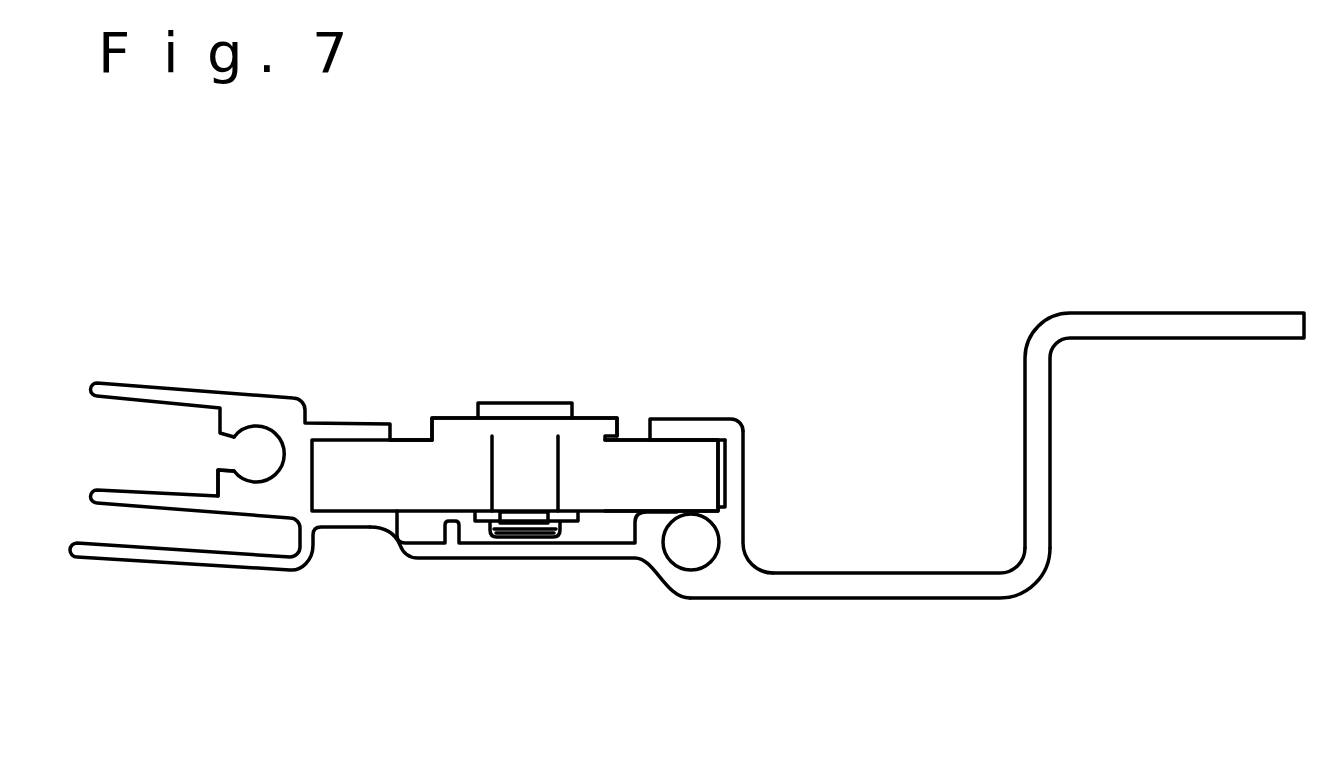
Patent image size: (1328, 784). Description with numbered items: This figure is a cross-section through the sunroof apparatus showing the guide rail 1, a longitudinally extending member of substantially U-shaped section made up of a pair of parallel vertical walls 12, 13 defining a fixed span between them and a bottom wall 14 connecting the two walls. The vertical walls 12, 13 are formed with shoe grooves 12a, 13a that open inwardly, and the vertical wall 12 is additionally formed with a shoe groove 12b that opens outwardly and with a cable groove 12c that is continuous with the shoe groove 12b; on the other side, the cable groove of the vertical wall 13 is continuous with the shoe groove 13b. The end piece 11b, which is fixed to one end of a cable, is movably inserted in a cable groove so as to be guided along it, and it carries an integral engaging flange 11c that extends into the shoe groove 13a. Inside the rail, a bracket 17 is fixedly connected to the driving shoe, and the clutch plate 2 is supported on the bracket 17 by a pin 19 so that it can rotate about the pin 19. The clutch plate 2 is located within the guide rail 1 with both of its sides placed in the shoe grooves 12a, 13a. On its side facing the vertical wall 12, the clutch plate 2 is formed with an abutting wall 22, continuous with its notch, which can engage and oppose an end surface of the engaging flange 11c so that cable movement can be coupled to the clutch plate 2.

The guide rail 1 is at (92, 374).
The clutch plate 2 is at (412, 428).
The end piece 11b is at (692, 533).
The engaging flange 11c is at (705, 503).
The vertical wall 12 is at (250, 413).
The shoe groove 12a is at (348, 510).
The shoe groove 12b is at (160, 413).
The cable groove 12c is at (243, 482).
The vertical wall 13 is at (737, 463).
The shoe groove 13a is at (696, 446).
The shoe groove 13b is at (712, 565).
The bottom wall 14 is at (493, 548).
The bracket 17 is at (455, 427).
The pin 19 is at (528, 455).
The abutting wall 22 is at (640, 470).